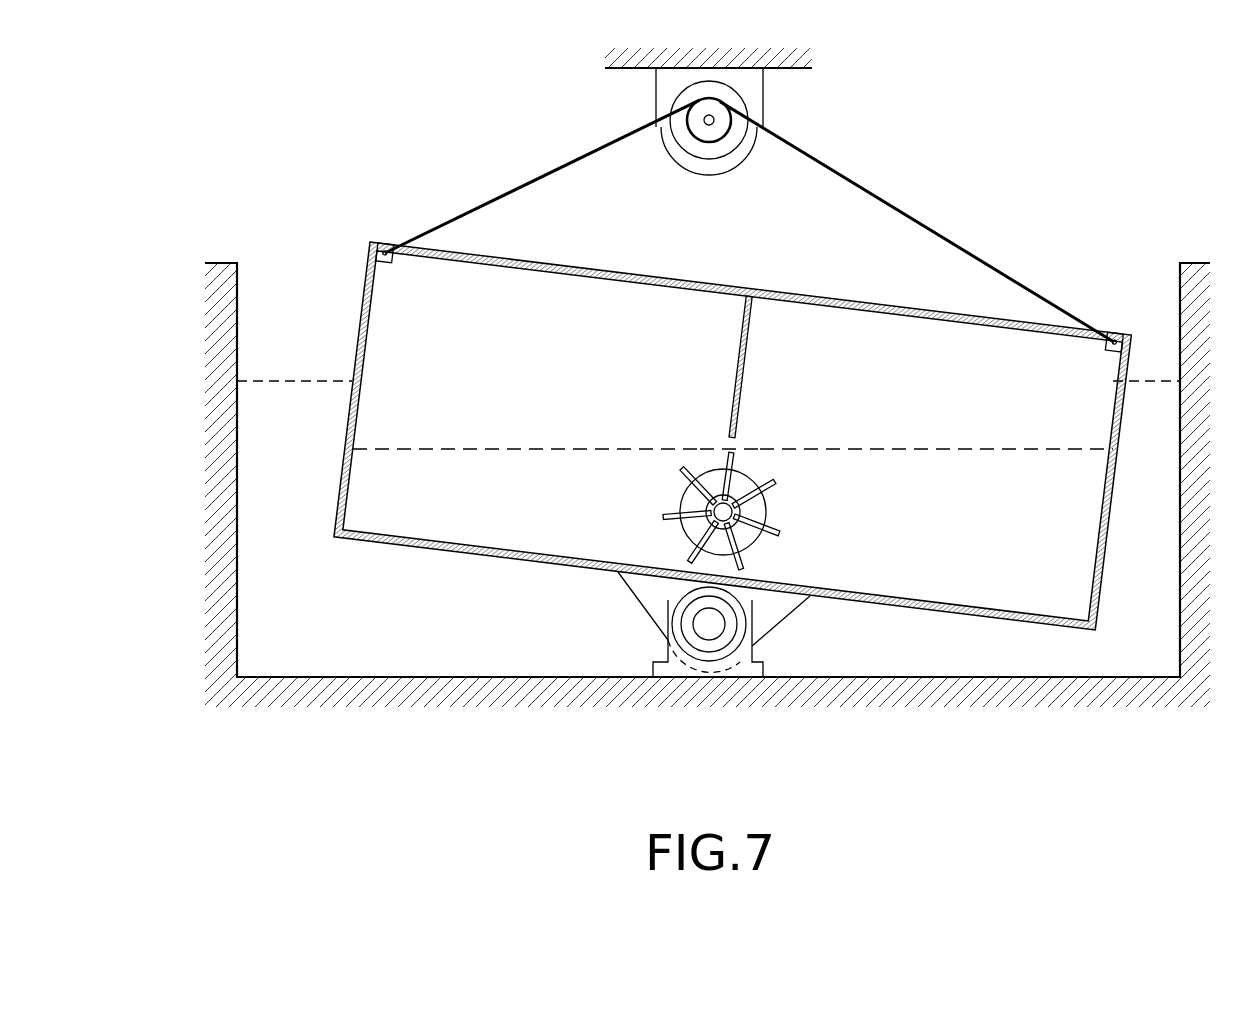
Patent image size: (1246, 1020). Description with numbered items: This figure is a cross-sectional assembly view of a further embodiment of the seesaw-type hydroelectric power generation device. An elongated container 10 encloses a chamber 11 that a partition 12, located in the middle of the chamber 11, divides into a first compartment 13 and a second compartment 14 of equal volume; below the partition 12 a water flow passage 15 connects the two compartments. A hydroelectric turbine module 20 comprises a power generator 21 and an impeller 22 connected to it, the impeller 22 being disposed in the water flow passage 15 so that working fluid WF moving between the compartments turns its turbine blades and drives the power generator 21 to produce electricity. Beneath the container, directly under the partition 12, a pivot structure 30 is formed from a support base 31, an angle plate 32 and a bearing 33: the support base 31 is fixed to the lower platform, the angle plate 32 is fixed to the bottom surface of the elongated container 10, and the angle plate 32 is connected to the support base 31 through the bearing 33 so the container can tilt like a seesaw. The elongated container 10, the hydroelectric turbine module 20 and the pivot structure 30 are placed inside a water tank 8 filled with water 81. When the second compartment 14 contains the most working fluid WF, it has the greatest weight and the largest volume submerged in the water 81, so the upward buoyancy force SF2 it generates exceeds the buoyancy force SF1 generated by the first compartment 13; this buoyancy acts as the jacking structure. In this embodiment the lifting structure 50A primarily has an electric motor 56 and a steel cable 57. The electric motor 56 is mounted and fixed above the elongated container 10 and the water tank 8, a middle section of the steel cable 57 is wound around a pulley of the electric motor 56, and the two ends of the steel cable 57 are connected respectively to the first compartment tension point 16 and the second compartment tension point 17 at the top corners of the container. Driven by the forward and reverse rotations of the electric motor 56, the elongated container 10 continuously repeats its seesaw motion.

The water tank 8 is at (258, 296).
The elongated container 10 is at (706, 382).
The chamber 11 is at (394, 306).
The partition 12 is at (753, 315).
The first compartment 13 is at (540, 320).
The second compartment 14 is at (875, 350).
The water flow passage 15 is at (724, 440).
The first compartment tension point 16 is at (376, 246).
The second compartment tension point 17 is at (1115, 333).
The water 81 is at (1153, 385).
The hydroelectric turbine module 20 is at (811, 515).
The power generator 21 is at (766, 506).
The impeller 22 is at (766, 555).
The pivot structure 30 is at (714, 685).
The support base 31 is at (677, 660).
The angle plate 32 is at (757, 608).
The bearing 33 is at (711, 638).
The lifting structure 50A is at (749, 195).
The electric motor 56 is at (749, 100).
The steel cable 57 is at (840, 118).
The working fluid WF is at (1043, 453).
The buoyancy force of first compartment SF1 is at (480, 578).
The buoyancy force of second compartment SF2 is at (937, 578).